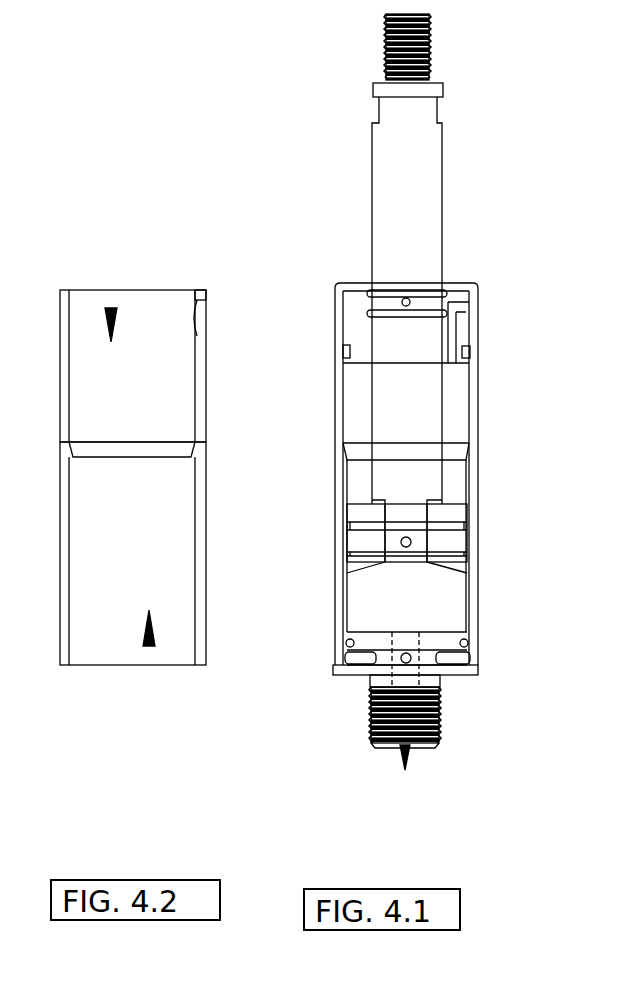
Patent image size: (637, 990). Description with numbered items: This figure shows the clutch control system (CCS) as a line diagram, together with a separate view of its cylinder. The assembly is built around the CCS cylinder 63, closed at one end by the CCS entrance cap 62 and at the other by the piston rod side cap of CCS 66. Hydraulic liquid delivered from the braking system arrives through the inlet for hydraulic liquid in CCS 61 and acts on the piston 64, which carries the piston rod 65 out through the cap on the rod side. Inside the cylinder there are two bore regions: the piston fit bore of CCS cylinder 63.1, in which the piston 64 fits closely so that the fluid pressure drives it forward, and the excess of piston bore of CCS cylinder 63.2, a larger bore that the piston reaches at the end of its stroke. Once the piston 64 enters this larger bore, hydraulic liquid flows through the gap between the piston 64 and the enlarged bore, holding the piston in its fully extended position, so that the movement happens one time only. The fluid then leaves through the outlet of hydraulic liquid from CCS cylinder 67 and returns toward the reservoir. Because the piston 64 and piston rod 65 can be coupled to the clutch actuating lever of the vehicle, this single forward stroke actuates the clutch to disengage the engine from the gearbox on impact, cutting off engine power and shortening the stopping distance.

In FIG. 4.1, the inlet for hydraulic liquid in CCS 61 is at (405, 830).
In FIG. 4.1, the CCS entrance cap 62 is at (370, 642).
In FIG. 4.1, the CCS cylinder 63 is at (337, 505).
In FIG. 4.2, the piston fit bore of CCS cylinder 63.1 is at (150, 704).
In FIG. 4.2, the excess of piston bore of CCS cylinder 63.2 is at (108, 247).
In FIG. 4.1, the piston 64 is at (368, 542).
In FIG. 4.1, the piston rod 65 is at (378, 195).
In FIG. 4.1, the piston rod side cap of CCS 66 is at (358, 335).
In FIG. 4.1, the outlet of hydraulic liquid from CCS cylinder 67 is at (476, 292).